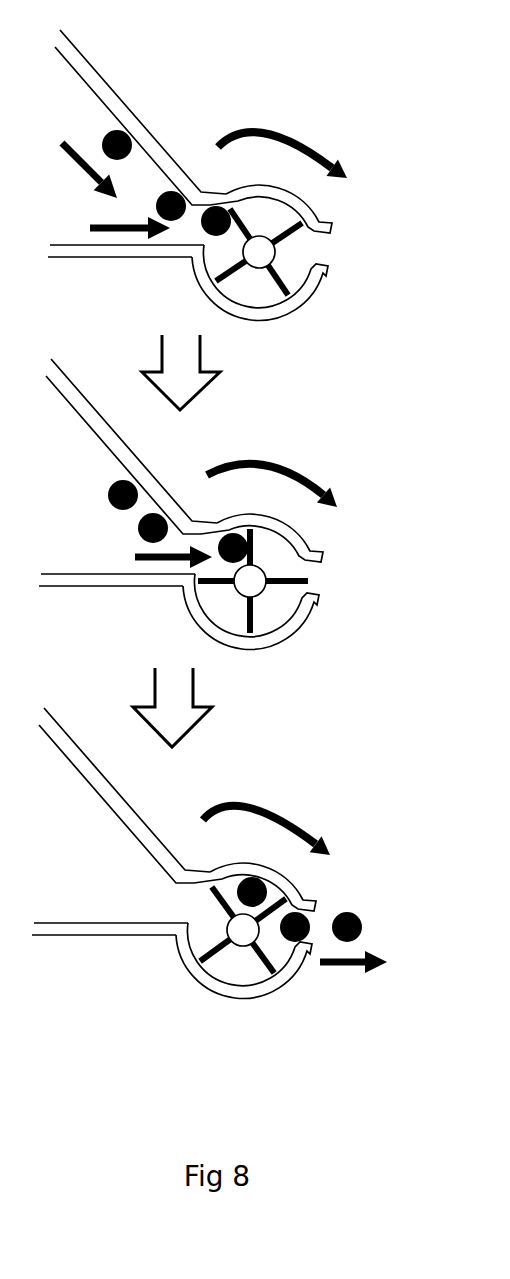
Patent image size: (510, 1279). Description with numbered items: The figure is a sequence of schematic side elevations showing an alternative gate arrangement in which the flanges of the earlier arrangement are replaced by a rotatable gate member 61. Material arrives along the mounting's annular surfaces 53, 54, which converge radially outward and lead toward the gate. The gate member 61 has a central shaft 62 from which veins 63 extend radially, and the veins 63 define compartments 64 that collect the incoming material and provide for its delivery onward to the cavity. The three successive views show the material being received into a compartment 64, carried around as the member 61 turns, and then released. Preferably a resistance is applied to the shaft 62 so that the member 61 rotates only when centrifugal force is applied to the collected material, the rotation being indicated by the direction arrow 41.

The rotation direction of rotor 41 is at (284, 91).
The annular surface 53 is at (118, 108).
The annular surface 54 is at (70, 255).
The rotatable gate member 61 is at (271, 210).
The central shaft 62 is at (262, 253).
The veins 63 is at (300, 228).
The compartment 64 is at (263, 288).